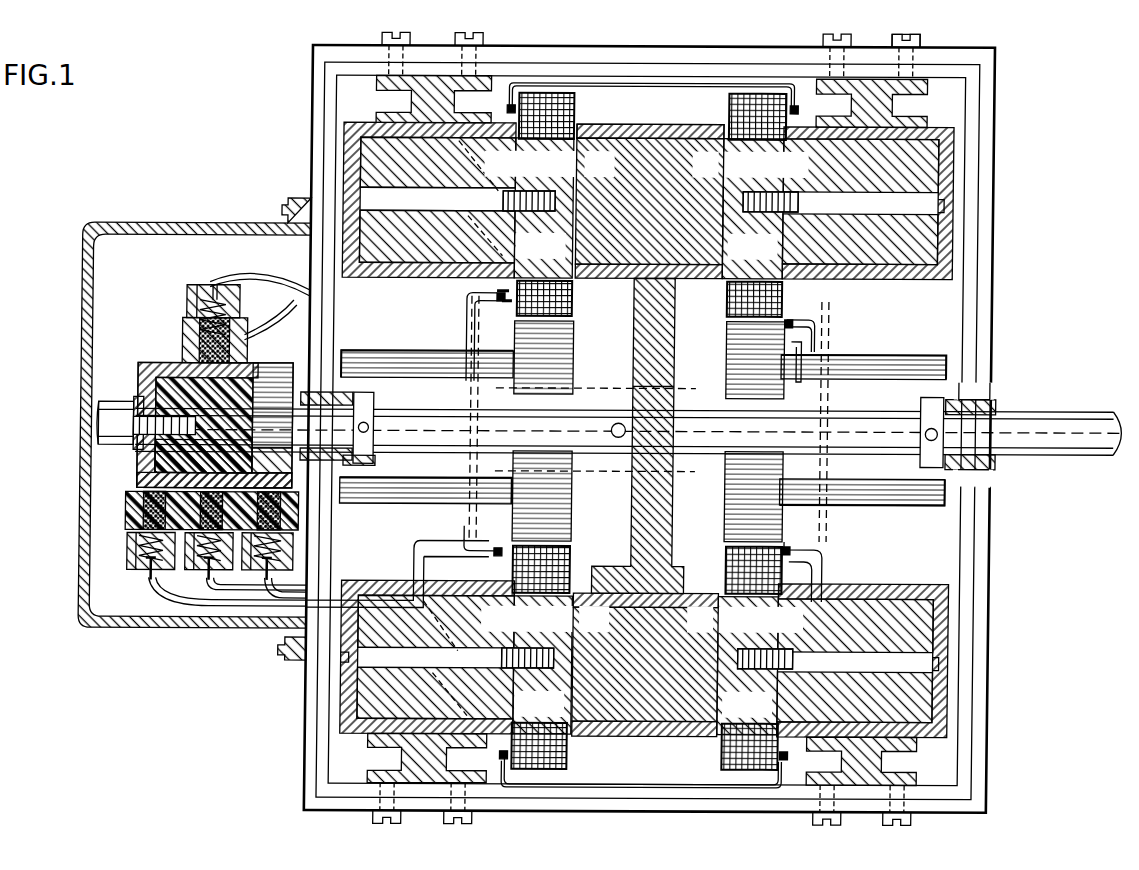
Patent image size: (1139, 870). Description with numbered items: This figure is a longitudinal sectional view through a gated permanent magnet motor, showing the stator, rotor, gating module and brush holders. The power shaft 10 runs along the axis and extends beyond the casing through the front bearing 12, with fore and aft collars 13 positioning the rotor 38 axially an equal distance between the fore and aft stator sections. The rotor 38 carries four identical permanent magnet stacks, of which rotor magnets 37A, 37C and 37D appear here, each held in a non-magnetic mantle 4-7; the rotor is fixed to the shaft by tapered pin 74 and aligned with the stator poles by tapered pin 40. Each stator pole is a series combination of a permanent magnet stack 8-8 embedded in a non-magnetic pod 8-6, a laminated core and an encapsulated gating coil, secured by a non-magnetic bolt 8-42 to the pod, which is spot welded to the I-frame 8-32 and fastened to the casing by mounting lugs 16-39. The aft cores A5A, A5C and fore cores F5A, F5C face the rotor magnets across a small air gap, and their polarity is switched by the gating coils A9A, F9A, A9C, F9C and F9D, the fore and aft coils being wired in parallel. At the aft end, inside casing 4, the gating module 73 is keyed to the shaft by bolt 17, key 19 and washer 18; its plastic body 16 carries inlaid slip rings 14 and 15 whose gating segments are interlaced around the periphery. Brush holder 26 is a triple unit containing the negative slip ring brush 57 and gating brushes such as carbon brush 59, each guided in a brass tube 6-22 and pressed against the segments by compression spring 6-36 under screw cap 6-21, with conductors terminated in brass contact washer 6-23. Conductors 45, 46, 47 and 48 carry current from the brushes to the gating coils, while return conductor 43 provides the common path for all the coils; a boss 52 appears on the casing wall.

The casing 4 is at (84, 247).
The power shaft 10 is at (1028, 410).
The front bearing 12 is at (1012, 462).
The collar 13 is at (374, 403).
The slip ring 14 is at (305, 362).
The slip ring 15 is at (142, 482).
The main structural element 16 is at (142, 462).
The bolt 17 is at (103, 415).
The washer 18 is at (103, 440).
The key 19 is at (140, 403).
The brush holder 26 is at (131, 530).
The negative slip ring brush 57 is at (131, 507).
The screw cap 6-21 is at (133, 550).
The brass tube 6-22 is at (203, 318).
The brass contact washer 6-23 is at (212, 295).
The compression spring 6-36 is at (198, 315).
The gating module 73 is at (175, 366).
The carbon brush 59 is at (255, 349).
The conductor 47 is at (260, 267).
The conductor 48 is at (456, 335).
The return conductor 43 is at (811, 331).
The conductor 45 is at (165, 592).
The conductor 46 is at (243, 593).
The boss 52 is at (285, 655).
The I-frame 8-32 is at (378, 82).
The non-magnetic bolt 8-42 is at (350, 670).
The permanent magnet stack 8-8 is at (378, 138).
The pod 8-6 is at (378, 150).
The gating coil A9A is at (547, 100).
The gating coil A9C is at (517, 815).
The gating coil F9A is at (748, 100).
The gating coil F9C is at (748, 770).
The gating coil F9D is at (727, 457).
The aft stator pole core A5A is at (575, 113).
The aft stator pole core A5C is at (549, 679).
The fore stator pole core F5A is at (730, 113).
The fore stator pole core F5C is at (731, 679).
The mantle 4-7 is at (644, 150).
The rotor permanent magnet 37A is at (644, 138).
The rotor permanent magnet 37C is at (640, 736).
The rotor permanent magnet 37D is at (678, 360).
The rotor 38 is at (637, 312).
The tapered pin 40 is at (372, 425).
The tapered pin 74 is at (618, 438).
The mounting lug 16-39 is at (893, 47).